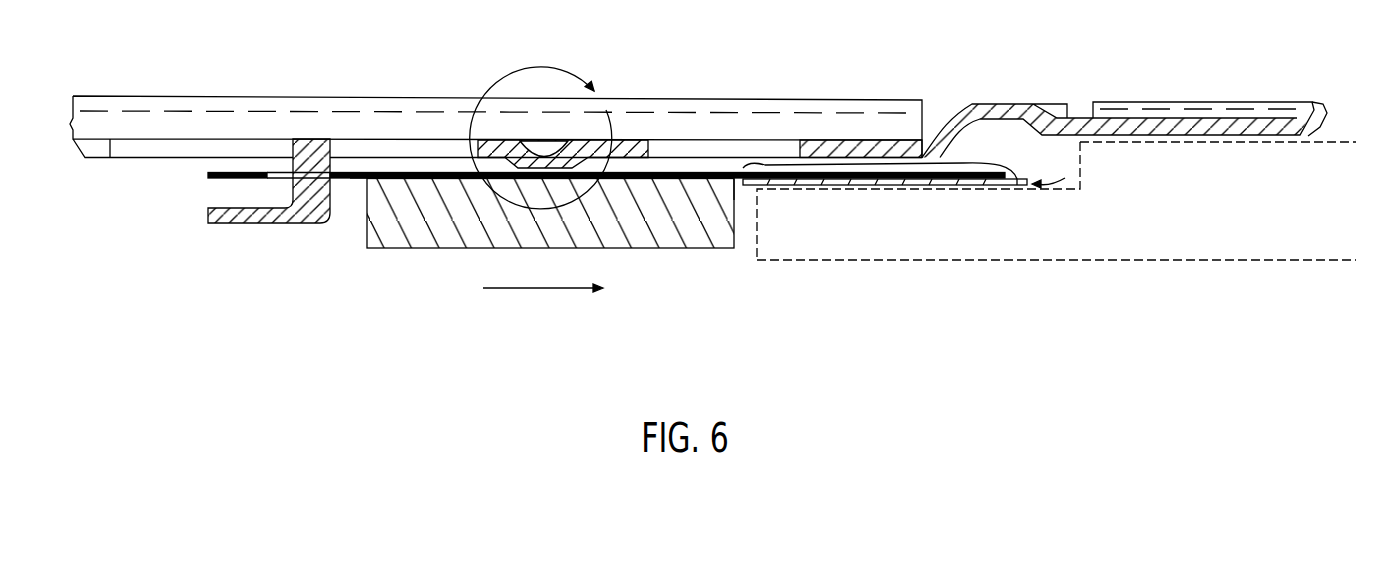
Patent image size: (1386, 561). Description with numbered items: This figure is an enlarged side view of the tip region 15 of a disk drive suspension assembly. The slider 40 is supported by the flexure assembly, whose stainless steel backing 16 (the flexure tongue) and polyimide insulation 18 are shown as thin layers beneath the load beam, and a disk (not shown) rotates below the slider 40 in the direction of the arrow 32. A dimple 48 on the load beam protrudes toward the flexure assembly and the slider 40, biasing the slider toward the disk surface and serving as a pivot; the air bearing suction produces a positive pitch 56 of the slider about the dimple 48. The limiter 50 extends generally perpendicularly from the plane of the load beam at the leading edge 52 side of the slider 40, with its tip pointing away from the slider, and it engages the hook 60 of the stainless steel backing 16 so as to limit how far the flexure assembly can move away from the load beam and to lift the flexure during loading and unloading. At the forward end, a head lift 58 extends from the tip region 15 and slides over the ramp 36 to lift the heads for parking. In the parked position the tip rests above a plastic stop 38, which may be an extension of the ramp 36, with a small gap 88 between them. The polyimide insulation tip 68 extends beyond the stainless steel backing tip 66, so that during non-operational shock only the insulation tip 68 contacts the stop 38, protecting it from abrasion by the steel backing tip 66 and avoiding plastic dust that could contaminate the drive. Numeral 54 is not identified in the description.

The tip region 15 is at (768, 164).
The stainless steel backing 16 is at (665, 181).
The polyimide insulation 18 is at (877, 185).
The arrow 32 is at (521, 293).
The ramp 36 is at (1266, 203).
The stop 38 is at (952, 247).
The slider 40 is at (442, 248).
The dimple 48 is at (558, 147).
The limiter 50 is at (235, 225).
The leading edge 52 is at (360, 187).
The block edge 54 is at (740, 186).
The positive pitch 56 is at (493, 87).
The head lift 58 is at (1173, 102).
The hook 60 is at (208, 176).
The stainless steel backing tip 66 is at (982, 175).
The polyimide insulation tip 68 is at (1015, 173).
The gap 88 is at (1054, 168).